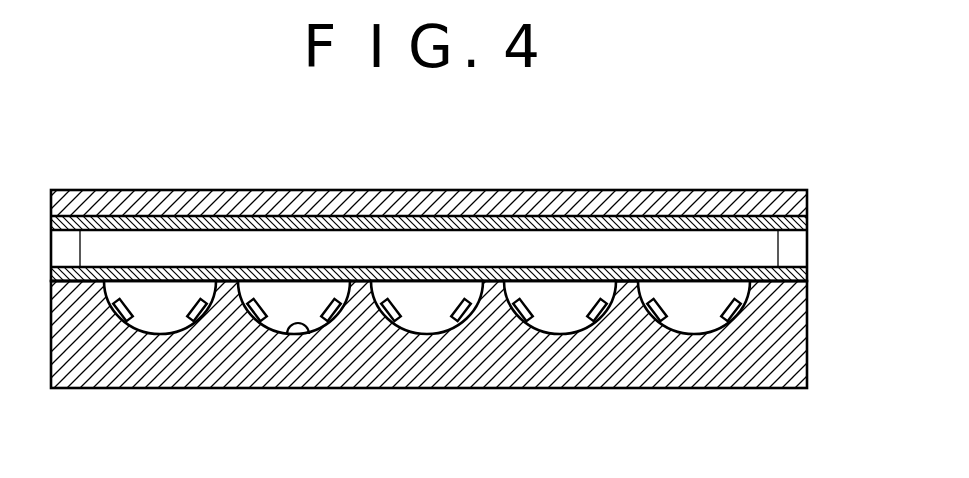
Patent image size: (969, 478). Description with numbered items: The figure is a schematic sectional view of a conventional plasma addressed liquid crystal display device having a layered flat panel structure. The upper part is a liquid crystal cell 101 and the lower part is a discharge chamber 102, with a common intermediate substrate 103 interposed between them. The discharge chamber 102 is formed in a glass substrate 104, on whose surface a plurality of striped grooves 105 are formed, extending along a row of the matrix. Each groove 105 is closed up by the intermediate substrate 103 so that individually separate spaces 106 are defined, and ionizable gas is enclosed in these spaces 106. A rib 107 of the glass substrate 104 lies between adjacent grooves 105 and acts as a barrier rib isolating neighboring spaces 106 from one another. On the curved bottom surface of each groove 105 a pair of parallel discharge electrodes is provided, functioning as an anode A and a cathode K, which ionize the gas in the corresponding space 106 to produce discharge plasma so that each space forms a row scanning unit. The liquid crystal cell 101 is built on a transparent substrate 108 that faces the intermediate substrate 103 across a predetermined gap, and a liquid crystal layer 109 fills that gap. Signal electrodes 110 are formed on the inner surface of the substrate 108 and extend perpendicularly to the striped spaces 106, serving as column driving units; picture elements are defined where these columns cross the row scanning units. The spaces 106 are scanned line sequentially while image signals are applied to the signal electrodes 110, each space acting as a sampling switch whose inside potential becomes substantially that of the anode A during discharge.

The liquid crystal cell 101 is at (473, 209).
The discharge chamber 102 is at (477, 367).
The common intermediate substrate 103 is at (700, 280).
The glass substrate 104 is at (270, 367).
The striped grooves 105 is at (307, 336).
The spaces 106 is at (158, 308).
The rib 107 is at (623, 303).
The transparent substrate 108 is at (617, 197).
The liquid crystal layer 109 is at (282, 245).
The signal electrodes 110 is at (452, 220).
The anode A is at (397, 307).
The cathode K is at (455, 306).